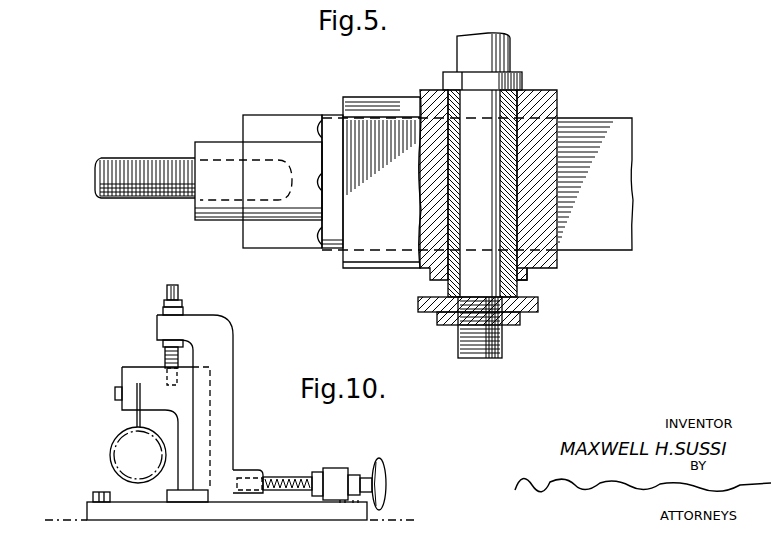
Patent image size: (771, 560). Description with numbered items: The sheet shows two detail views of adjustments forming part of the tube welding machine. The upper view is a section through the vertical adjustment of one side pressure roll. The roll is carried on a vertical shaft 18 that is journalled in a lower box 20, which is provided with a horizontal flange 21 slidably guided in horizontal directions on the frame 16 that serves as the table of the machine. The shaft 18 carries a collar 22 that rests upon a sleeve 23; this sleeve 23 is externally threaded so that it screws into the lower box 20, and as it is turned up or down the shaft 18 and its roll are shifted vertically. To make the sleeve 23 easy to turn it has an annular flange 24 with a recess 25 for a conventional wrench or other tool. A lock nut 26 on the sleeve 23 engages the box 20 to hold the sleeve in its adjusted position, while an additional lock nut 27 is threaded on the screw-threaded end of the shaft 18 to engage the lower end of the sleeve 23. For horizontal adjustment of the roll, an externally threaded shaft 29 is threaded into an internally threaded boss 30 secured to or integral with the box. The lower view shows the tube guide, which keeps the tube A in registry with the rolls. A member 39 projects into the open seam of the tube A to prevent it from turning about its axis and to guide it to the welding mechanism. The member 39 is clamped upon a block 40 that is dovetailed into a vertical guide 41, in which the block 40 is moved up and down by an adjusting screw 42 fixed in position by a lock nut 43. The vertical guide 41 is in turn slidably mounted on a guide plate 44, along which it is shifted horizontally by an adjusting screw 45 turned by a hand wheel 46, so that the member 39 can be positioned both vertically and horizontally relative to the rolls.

In FIG. 5, the frame 16 is at (618, 240).
In FIG. 5, the vertical shaft 18 is at (503, 52).
In FIG. 5, the lower box 20 is at (362, 237).
In FIG. 5, the horizontal flange 21 is at (383, 106).
In FIG. 5, the collar 22 is at (522, 80).
In FIG. 5, the sleeve 23 is at (557, 122).
In FIG. 5, the annular flange 24 is at (428, 313).
In FIG. 5, the recess 25 is at (540, 305).
In FIG. 5, the lock nut 26 is at (530, 278).
In FIG. 5, the lock nut 27 is at (520, 326).
In FIG. 5, the externally threaded shaft 29 is at (140, 199).
In FIG. 5, the internally threaded boss 30 is at (222, 221).
In FIG. 10, the member 39 is at (135, 430).
In FIG. 10, the block 40 is at (130, 371).
In FIG. 10, the vertical guide 41 is at (235, 416).
In FIG. 10, the adjusting screw 42 is at (180, 356).
In FIG. 10, the lock nut 43 is at (158, 343).
In FIG. 10, the guide plate 44 is at (87, 508).
In FIG. 10, the adjusting screw 45 is at (280, 477).
In FIG. 10, the hand wheel 46 is at (388, 480).
In FIG. 10, the tube A is at (112, 467).